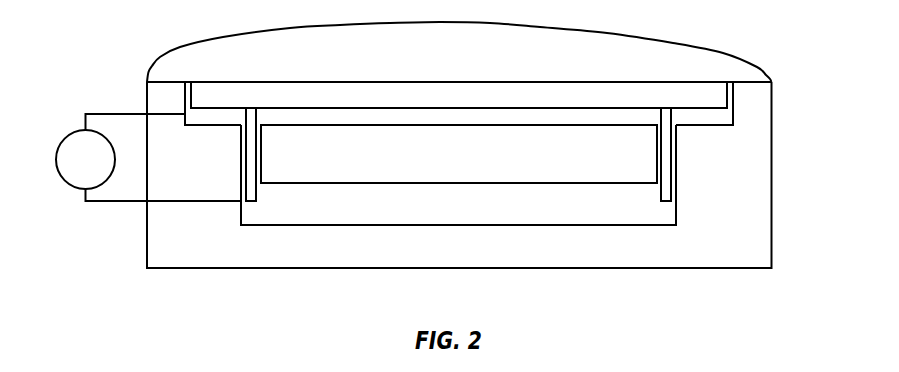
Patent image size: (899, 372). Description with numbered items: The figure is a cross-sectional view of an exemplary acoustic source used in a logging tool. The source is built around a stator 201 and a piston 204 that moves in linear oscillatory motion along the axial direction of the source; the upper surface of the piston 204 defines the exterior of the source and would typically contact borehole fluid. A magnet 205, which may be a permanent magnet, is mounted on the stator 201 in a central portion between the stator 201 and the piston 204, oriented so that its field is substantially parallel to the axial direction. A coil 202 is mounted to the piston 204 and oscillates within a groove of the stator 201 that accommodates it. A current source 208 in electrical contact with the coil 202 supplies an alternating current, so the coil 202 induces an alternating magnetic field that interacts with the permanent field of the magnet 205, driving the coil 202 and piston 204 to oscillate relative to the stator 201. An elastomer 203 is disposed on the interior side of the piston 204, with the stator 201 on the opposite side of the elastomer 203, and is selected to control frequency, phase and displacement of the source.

The stator 201 is at (512, 140).
The coil 202 is at (250, 163).
The elastomer 203 is at (708, 117).
The piston 204 is at (413, 92).
The magnet 205 is at (483, 215).
The current source 208 is at (72, 132).